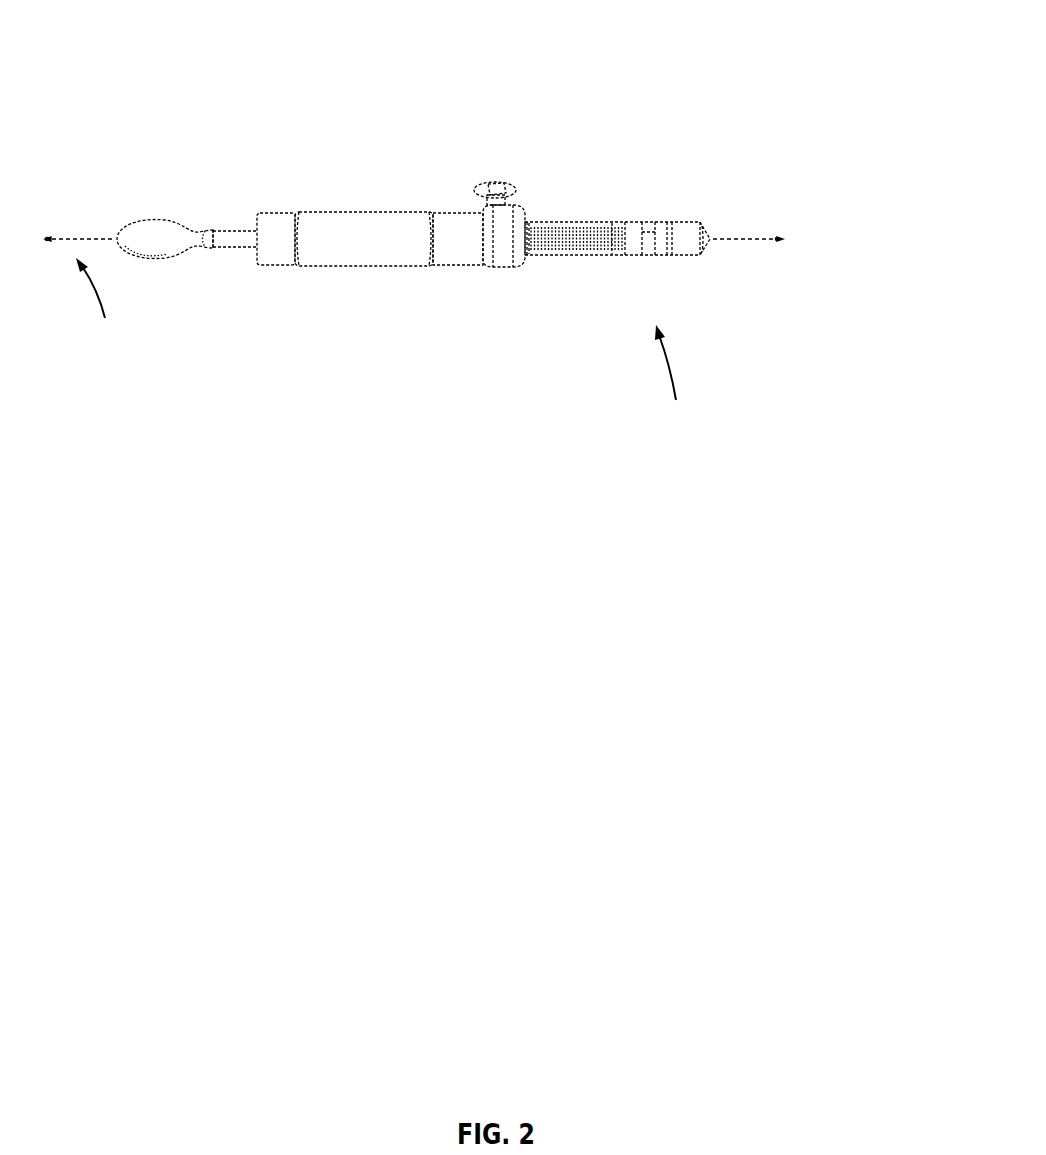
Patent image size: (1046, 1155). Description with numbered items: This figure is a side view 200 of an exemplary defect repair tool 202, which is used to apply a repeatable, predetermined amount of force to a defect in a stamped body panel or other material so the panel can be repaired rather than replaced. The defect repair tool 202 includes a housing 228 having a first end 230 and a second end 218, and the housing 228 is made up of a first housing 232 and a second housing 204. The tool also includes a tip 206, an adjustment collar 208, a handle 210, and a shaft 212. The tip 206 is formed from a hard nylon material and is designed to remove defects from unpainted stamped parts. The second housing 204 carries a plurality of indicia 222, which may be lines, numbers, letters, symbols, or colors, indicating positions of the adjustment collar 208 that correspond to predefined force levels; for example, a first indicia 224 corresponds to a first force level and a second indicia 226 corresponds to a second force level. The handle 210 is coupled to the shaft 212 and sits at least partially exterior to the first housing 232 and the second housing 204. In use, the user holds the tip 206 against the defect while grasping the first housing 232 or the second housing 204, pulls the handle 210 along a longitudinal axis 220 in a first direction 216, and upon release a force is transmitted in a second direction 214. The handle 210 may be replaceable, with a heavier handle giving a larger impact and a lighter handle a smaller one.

The side view 200 is at (640, 75).
The defect repair tool 202 is at (372, 236).
The second housing 204 is at (649, 248).
The tip 206 is at (702, 255).
The adjustment collar 208 is at (505, 265).
The handle 210 is at (150, 218).
The shaft 212 is at (230, 248).
The second direction 214 is at (766, 240).
The first direction 216 is at (94, 240).
The second end 218 is at (682, 383).
The longitudinal axis 220 is at (111, 307).
The plurality of indicia 222 is at (586, 252).
The first indicia 224 is at (537, 220).
The second indicia 226 is at (613, 222).
The housing 228 is at (435, 158).
The first end 230 is at (280, 296).
The first housing 232 is at (385, 262).